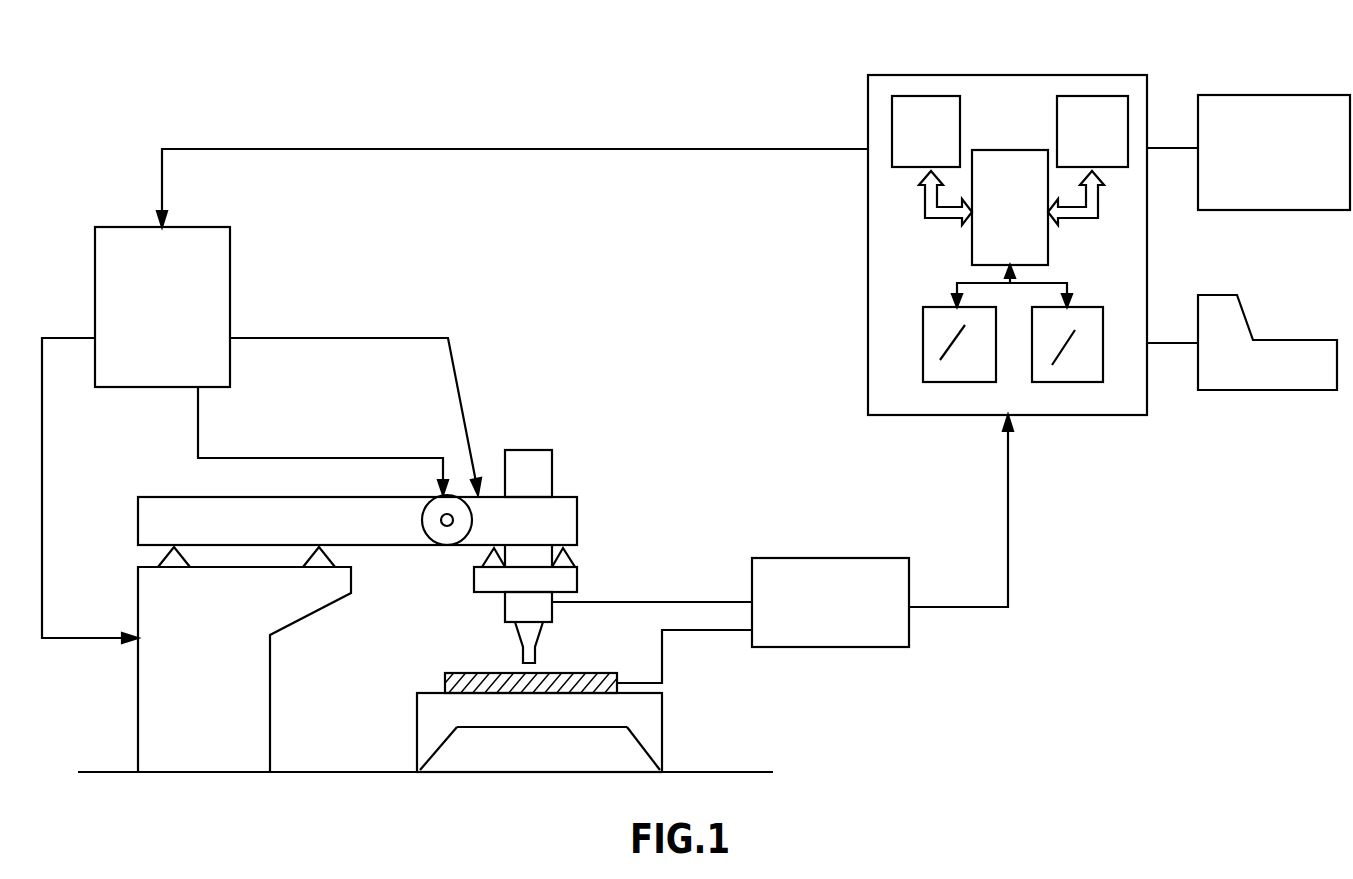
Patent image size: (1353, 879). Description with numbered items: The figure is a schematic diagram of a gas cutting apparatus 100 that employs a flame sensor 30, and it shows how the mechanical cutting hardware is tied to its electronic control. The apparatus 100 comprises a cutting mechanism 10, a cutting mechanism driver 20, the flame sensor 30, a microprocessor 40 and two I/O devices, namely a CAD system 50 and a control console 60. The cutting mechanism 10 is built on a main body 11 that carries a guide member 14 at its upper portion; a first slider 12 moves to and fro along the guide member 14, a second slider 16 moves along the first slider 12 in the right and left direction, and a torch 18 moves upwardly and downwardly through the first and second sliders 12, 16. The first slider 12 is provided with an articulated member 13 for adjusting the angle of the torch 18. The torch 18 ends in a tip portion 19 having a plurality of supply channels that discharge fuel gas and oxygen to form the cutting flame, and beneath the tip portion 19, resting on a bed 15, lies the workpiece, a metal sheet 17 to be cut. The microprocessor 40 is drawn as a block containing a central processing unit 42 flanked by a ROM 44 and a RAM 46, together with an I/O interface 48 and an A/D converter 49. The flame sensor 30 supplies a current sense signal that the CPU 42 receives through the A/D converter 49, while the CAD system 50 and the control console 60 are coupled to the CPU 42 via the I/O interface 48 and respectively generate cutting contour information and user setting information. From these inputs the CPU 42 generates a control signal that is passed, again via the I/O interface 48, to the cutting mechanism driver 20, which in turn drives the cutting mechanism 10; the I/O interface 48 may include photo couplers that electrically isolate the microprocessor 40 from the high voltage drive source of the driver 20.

The gas cutting apparatus 100 is at (487, 96).
The cutting mechanism 10 is at (400, 326).
The main body 11 is at (138, 713).
The first slider 12 is at (180, 497).
The articulated member 13 is at (441, 527).
The guide member 14 is at (160, 557).
The bed 15 is at (662, 716).
The second slider 16 is at (577, 578).
The metal sheet 17 is at (450, 680).
The torch 18 is at (515, 606).
The tip portion 19 is at (538, 641).
The cutting mechanism driver 20 is at (234, 218).
The flame sensor 30 is at (820, 558).
The microprocessor 40 is at (1067, 75).
The central processing unit 42 is at (1010, 150).
The ROM 44 is at (932, 96).
The RAM 46 is at (1113, 96).
The I/O interface 48 is at (923, 327).
The A/D converter 49 is at (1103, 325).
The CAD system 50 is at (1258, 95).
The control console 60 is at (1295, 340).